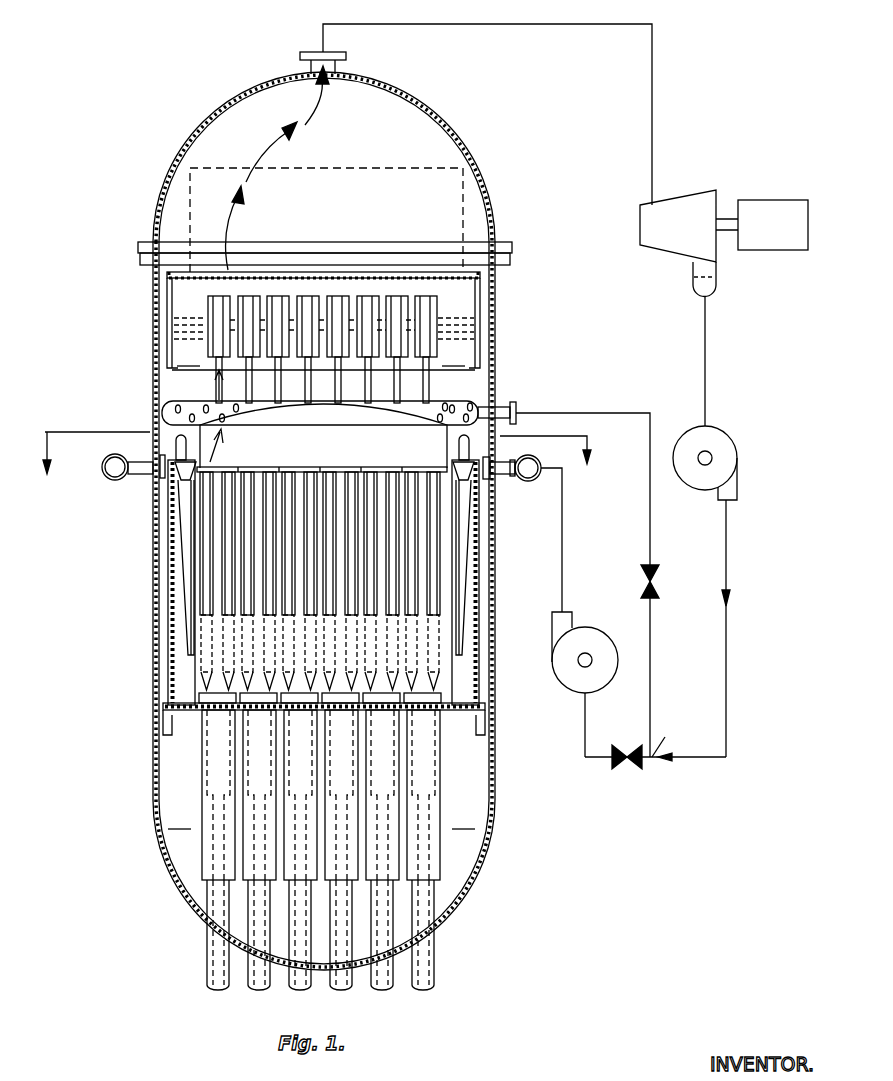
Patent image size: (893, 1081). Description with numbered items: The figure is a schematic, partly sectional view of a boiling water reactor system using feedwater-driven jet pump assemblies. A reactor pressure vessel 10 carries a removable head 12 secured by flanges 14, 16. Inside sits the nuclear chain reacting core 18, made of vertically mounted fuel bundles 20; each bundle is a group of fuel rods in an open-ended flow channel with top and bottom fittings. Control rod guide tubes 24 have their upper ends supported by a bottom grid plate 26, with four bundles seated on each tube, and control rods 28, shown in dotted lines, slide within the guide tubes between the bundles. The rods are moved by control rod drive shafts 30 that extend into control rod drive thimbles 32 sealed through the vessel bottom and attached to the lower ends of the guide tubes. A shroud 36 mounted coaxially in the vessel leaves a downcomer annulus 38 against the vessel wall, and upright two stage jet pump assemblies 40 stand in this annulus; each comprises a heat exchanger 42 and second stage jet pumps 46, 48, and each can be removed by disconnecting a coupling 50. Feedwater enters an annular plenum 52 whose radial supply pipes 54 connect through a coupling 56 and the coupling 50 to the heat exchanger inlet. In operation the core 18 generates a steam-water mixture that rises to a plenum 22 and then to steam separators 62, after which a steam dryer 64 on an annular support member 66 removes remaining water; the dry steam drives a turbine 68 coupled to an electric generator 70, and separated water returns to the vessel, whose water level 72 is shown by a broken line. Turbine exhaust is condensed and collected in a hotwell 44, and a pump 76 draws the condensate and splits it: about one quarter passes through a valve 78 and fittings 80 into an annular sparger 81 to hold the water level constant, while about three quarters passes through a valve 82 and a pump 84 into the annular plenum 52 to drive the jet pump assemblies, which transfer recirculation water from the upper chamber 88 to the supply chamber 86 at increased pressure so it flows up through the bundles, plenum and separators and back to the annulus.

The reactor pressure vessel 10 is at (152, 615).
The removable head 12 is at (412, 93).
The flange 14 is at (505, 247).
The flange 16 is at (505, 263).
The nuclear chain reacting core 18 is at (321, 568).
The nuclear fuel bundles 20 is at (228, 556).
The plenum 22 is at (336, 447).
The control rod guide tubes 24 is at (253, 780).
The bottom grid plate 26 is at (493, 707).
The control rods 28 is at (248, 645).
The control rod drive shafts 30 is at (253, 930).
The control rod drive thimbles 32 is at (250, 975).
The shroud 36 is at (183, 568).
The downcomer annulus 38 is at (160, 520).
The two stage jet pump assemblies 40 is at (168, 632).
The heat exchanger 42 is at (178, 588).
The hotwell 44 is at (712, 281).
The second stage jet pump 46 is at (466, 622).
The second stage jet pump 48 is at (185, 490).
The coupling 50 is at (497, 452).
The annular plenum 52 is at (108, 456).
The supply pipes 54 is at (515, 458).
The coupling 56 is at (135, 466).
The steam separators 62 is at (212, 316).
The steam dryer 64 is at (463, 195).
The annular support member 66 is at (170, 283).
The turbine 68 is at (665, 208).
The electric generator 70 is at (762, 202).
The water level 72 is at (465, 316).
The pump 76 is at (730, 456).
The valve 78 is at (655, 573).
The fittings 80 is at (515, 408).
The annular sparger 81 is at (160, 400).
The valve 82 is at (625, 762).
The pump 84 is at (592, 632).
The supply chamber 86 is at (321, 818).
The upper chamber 88 is at (320, 355).